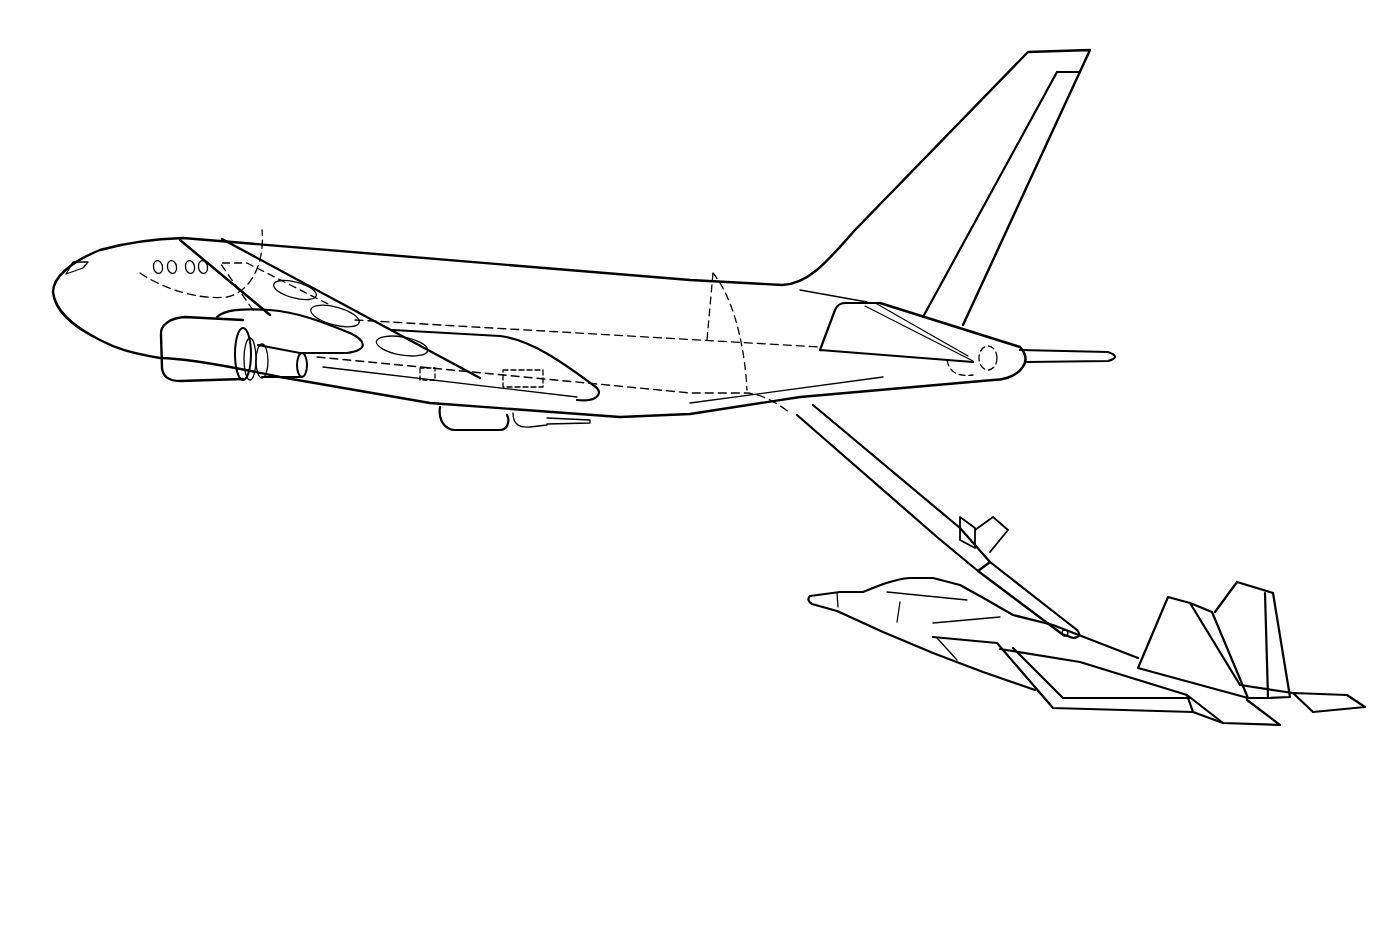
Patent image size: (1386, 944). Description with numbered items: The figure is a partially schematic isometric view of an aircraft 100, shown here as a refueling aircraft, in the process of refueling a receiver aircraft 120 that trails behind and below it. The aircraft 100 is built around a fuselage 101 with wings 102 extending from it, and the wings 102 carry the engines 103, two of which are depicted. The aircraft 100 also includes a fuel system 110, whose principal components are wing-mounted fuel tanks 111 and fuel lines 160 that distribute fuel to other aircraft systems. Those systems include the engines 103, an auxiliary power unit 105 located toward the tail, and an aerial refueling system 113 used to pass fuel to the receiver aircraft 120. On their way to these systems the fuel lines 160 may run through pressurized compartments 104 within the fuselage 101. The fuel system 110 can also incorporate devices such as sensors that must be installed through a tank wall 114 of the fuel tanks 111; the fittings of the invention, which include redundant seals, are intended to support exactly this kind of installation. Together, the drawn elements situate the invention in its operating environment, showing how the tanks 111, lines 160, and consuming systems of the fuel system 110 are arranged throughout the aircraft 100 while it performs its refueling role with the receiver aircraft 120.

The aircraft 100 is at (250, 499).
The fuel system 110 is at (420, 441).
The fuselage 101 is at (522, 283).
The wings 102 is at (260, 258).
The engines 103 is at (177, 343).
The pressurized compartments 104 is at (611, 348).
The auxiliary power unit 105 is at (1005, 340).
The wing-mounted fuel tanks 111 is at (140, 273).
The aerial refueling system 113 is at (549, 399).
The tank wall 114 is at (288, 260).
The fuel lines 160 is at (713, 273).
The receiver aircraft 120 is at (997, 665).